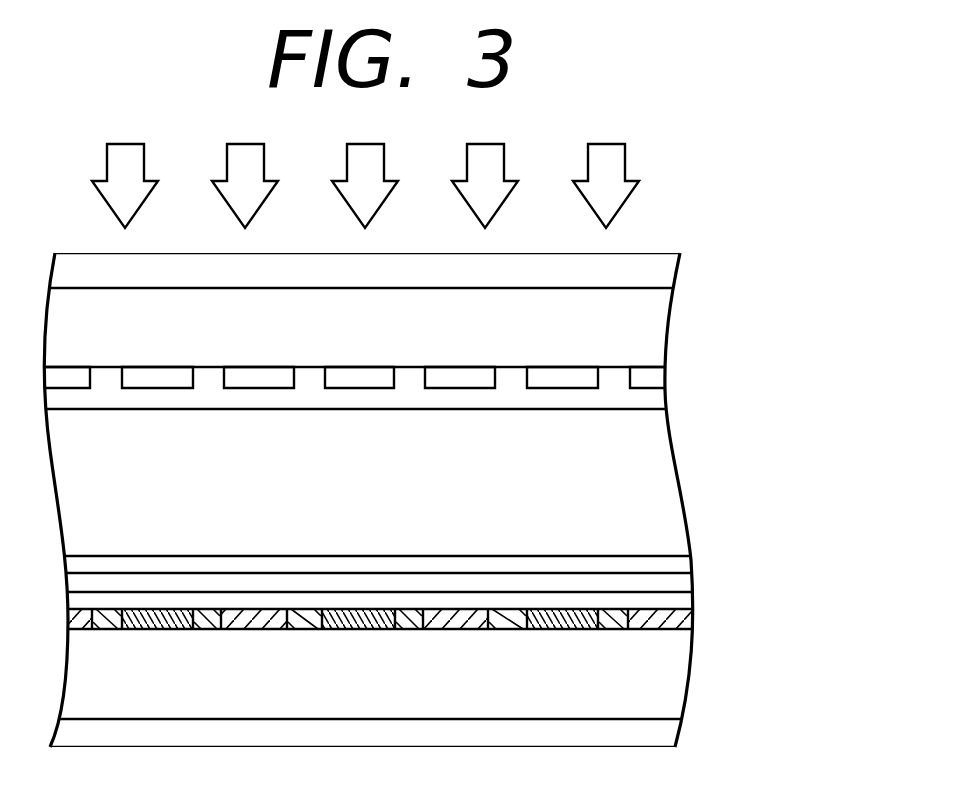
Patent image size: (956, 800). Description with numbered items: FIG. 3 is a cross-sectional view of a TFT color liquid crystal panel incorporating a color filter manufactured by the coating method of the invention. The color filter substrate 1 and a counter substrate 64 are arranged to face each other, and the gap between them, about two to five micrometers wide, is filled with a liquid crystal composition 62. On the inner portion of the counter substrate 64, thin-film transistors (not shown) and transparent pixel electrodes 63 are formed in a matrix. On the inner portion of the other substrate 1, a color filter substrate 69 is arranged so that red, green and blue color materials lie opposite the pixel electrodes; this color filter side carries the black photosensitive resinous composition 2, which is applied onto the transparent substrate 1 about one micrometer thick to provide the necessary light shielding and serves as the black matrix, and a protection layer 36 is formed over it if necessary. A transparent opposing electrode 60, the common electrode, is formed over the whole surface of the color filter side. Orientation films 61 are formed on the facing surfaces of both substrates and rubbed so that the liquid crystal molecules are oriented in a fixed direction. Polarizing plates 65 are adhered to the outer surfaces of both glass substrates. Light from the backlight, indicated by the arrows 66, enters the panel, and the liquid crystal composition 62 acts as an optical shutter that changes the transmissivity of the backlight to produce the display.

The transparent substrate 1 is at (668, 677).
The black photosensitive resinous composition 2 is at (618, 624).
The protection layer 36 is at (683, 597).
The transparent opposing electrode 60 is at (678, 578).
The orientation films 61 is at (658, 398).
The liquid crystal composition 62 is at (652, 442).
The transparent pixel electrodes 63 is at (652, 377).
The counter substrate 64 is at (652, 322).
The polarizing plates 65 is at (652, 264).
The incident light 66 is at (617, 158).
The color filter substrate 69 is at (810, 580).